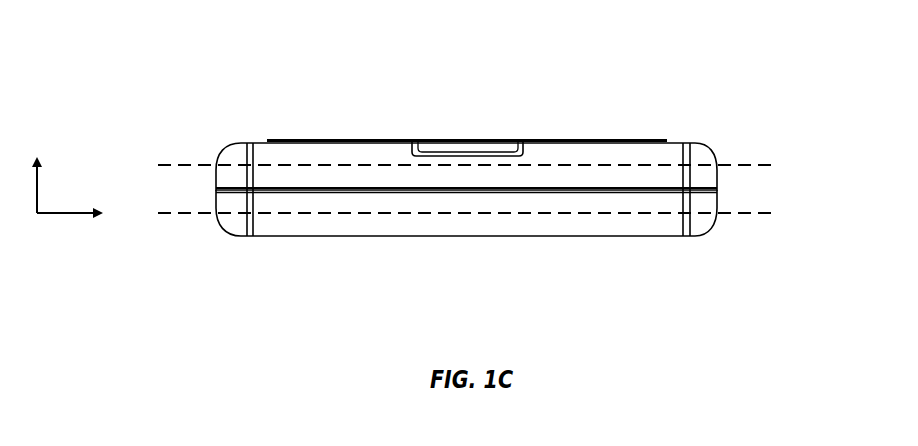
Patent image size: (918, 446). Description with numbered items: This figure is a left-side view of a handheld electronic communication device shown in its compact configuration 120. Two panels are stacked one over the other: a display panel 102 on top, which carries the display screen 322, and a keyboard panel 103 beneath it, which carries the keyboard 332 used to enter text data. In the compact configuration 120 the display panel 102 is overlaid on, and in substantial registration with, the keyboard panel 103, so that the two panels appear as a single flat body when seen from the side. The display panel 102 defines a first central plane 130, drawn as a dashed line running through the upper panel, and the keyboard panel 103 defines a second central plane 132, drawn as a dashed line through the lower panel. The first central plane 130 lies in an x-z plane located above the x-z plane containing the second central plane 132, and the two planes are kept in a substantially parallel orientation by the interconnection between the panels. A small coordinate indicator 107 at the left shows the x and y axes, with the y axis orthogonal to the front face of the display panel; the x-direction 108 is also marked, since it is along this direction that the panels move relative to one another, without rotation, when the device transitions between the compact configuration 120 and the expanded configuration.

The compact configuration 120 is at (520, 147).
The display panel 102 is at (603, 177).
The keyboard panel 103 is at (578, 227).
The display screen 322 is at (613, 140).
The keyboard 332 is at (470, 192).
The first central plane 130 is at (772, 165).
The second central plane 132 is at (772, 213).
The coordinate axes 107 is at (60, 130).
The x-direction 108 is at (150, 232).